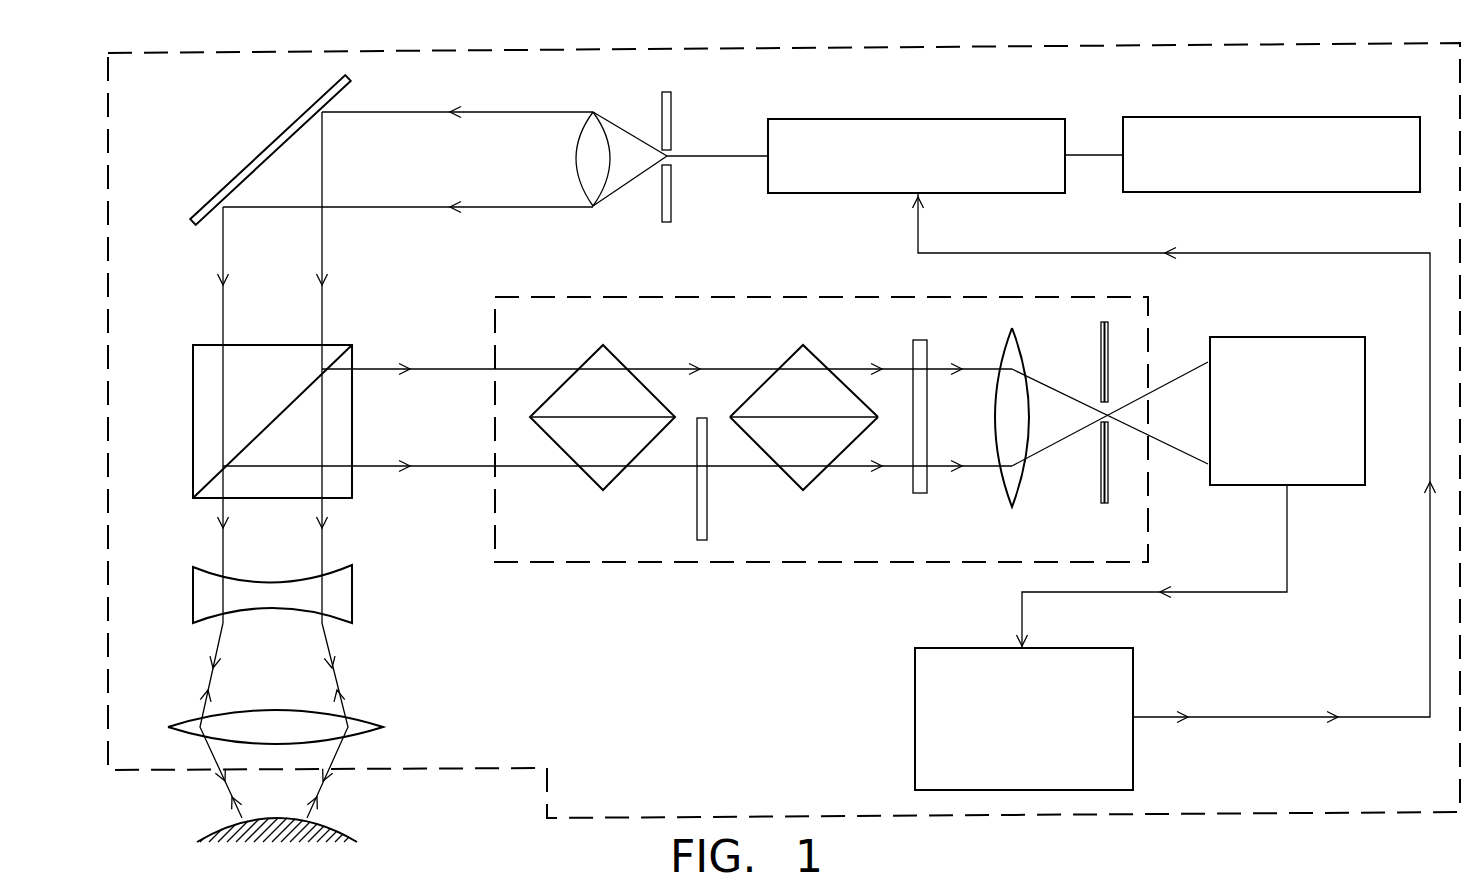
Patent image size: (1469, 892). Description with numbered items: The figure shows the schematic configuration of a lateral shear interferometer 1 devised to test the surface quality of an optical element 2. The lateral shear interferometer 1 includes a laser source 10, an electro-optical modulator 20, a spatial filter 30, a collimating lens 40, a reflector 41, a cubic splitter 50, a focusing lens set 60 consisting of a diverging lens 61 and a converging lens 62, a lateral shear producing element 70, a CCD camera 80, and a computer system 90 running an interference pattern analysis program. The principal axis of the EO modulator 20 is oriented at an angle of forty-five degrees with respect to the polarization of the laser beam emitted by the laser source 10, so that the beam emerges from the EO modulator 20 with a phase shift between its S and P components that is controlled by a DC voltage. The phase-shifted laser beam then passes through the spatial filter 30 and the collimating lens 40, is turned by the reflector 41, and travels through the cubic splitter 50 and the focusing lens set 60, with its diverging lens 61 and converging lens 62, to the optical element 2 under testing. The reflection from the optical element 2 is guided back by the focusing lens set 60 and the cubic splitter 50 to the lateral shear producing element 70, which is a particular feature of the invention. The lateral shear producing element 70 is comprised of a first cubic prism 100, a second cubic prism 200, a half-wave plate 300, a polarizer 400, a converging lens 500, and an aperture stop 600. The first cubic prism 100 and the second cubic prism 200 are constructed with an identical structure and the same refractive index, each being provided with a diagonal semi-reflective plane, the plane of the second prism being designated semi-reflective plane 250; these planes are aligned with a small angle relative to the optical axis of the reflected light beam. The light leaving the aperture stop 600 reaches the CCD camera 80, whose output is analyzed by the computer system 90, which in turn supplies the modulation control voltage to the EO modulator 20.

The lateral shear interferometer 1 is at (1305, 36).
The optical element 2 is at (350, 841).
The laser source 10 is at (1306, 117).
The electro-optical (EO) modulator 20 is at (1027, 119).
The spatial filter 30 is at (668, 96).
The collimating lens 40 is at (593, 112).
The reflector 41 is at (355, 96).
The cubic splitter 50 is at (193, 378).
The focusing lens set 60 is at (332, 691).
The diverging lens 61 is at (352, 597).
The converging lens 62 is at (300, 729).
The lateral shear producing element 70 is at (528, 297).
The CCD camera 80 is at (1342, 337).
The computer system 90 is at (928, 648).
The first cubic prism 100 is at (624, 357).
The second cubic prism 200 is at (770, 357).
The semi-reflective plane 250 is at (806, 492).
The half-wave plate 300 is at (707, 522).
The polarizer 400 is at (913, 350).
The converging lens 500 is at (1005, 507).
The aperture stop 600 is at (1101, 505).